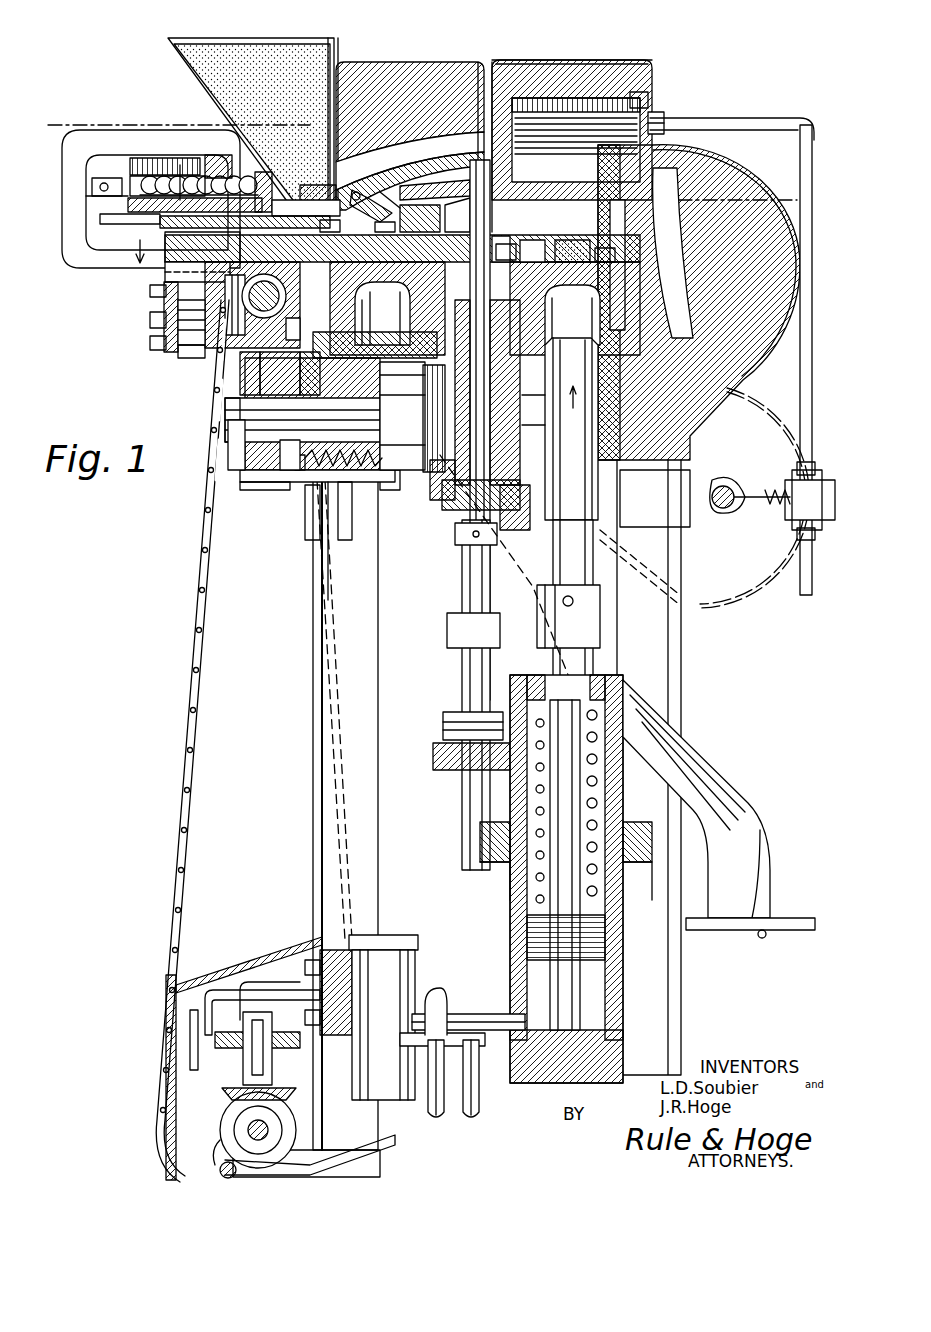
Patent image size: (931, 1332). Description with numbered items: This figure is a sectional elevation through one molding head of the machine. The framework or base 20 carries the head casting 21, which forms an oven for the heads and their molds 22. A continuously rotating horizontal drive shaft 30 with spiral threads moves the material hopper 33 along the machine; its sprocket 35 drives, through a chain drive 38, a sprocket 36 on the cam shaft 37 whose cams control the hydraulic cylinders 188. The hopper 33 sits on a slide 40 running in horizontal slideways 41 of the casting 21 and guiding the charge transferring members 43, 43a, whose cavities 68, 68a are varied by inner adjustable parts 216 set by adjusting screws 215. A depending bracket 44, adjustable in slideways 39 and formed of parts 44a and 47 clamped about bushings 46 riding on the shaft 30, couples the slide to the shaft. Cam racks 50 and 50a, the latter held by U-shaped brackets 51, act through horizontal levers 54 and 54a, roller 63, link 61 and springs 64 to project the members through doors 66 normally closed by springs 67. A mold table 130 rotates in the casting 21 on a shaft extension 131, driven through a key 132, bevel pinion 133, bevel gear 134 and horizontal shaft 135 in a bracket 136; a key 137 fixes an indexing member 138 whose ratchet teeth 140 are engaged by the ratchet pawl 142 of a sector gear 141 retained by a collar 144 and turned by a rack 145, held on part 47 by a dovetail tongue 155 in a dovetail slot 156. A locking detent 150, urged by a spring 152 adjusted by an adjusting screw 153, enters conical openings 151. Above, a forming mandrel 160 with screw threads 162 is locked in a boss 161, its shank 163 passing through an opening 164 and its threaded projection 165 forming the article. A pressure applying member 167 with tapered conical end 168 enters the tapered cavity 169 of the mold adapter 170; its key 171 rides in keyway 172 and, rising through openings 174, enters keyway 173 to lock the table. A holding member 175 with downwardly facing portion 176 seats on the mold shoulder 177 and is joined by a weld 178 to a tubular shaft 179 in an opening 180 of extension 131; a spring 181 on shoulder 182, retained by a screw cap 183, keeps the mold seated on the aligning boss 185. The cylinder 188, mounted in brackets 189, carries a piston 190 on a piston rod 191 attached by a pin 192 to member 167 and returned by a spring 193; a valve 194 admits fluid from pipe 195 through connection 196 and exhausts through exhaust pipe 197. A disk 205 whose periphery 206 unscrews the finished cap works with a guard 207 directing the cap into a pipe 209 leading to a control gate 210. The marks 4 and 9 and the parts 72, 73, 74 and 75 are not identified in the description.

The section line 4- 4 is at (52, 147).
The direction arrow 9 is at (132, 246).
The framework or base 20 is at (683, 656).
The head casting 21 is at (700, 178).
The mold 22 is at (555, 231).
The horizontal drive shaft 30 is at (250, 286).
The material hopper 33 is at (333, 52).
The sprocket 35 is at (242, 362).
The sprocket 36 is at (190, 1085).
The cam shaft 37 is at (246, 1126).
The chain drive 38 is at (186, 761).
The slideways 39 is at (245, 220).
The slide 40 is at (226, 225).
The horizontal slideways 41 is at (205, 245).
The charge transferring member 43 is at (407, 226).
The charge transferring member 43a is at (132, 207).
The depending bracket 44 is at (402, 248).
The bracket part 44a is at (166, 305).
The bushings 46 is at (228, 305).
The bracket part 47 is at (262, 358).
The cam rack 50 is at (175, 250).
The cam rack 50a is at (198, 180).
The U-shaped brackets 51 is at (75, 258).
The horizontal lever 54 is at (128, 220).
The horizontal lever 54a is at (100, 178).
The link 61 is at (100, 196).
The roller 63 is at (138, 160).
The spring 64 is at (182, 165).
The doors 66 is at (389, 193).
The springs 67 is at (370, 190).
The cavity 68 is at (420, 222).
The cavity 68a is at (352, 110).
The bolt 72 is at (152, 320).
The bolt 73 is at (152, 340).
The plate 74 is at (178, 352).
The bolt 75 is at (158, 290).
The mold table 130 is at (745, 388).
The shaft extension 131 is at (458, 500).
The key 132 is at (515, 505).
The bevel pinion 133 is at (445, 495).
The bevel gear 134 is at (435, 470).
The horizontal shaft 135 is at (355, 405).
The bracket 136 is at (340, 485).
The key 137 is at (300, 485).
The indexing member 138 is at (286, 485).
The ratchet teeth 140 is at (250, 380).
The sector gear 141 is at (246, 486).
The ratchet pawl 142 is at (278, 486).
The collar 144 is at (214, 465).
The rack 145 is at (235, 398).
The locking detent 150 is at (310, 540).
The conical openings 151 is at (345, 378).
The spring 152 is at (334, 484).
The adjusting screw 153 is at (388, 490).
The dovetail tongue 155 is at (248, 362).
The dovetail slot 156 is at (278, 332).
The forming mandrel 160 is at (650, 66).
The boss 161 is at (512, 104).
The screw threads 162 is at (642, 100).
The shank 163 is at (576, 140).
The opening 164 is at (630, 160).
The projection 165 is at (618, 208).
The pressure applying member 167 is at (602, 525).
The tapered conical end 168 is at (546, 392).
The tapered cavity 169 is at (600, 248).
The mold adapter 170 is at (795, 280).
The key 171 is at (612, 505).
The keyway 172 is at (618, 474).
The keyway 173 is at (493, 315).
The openings 174 is at (572, 240).
The holding member 175 is at (506, 244).
The downwardly facing portion 176 is at (500, 238).
The shoulder 177 is at (530, 255).
The weld 178 is at (482, 210).
The tubular shaft 179 is at (464, 565).
The opening 180 is at (524, 400).
The spring 181 is at (560, 393).
The shoulder 182 is at (520, 426).
The screw cap 183 is at (386, 292).
The aligning boss 185 is at (800, 338).
The hydraulic cylinder 188 is at (625, 726).
The brackets 189 is at (652, 985).
The piston 190 is at (620, 945).
The piston rod 191 is at (560, 880).
The pin 192 is at (570, 465).
The spring 193 is at (540, 825).
The valve 194 is at (408, 934).
The pipe 195 is at (484, 1112).
The connection 196 is at (452, 1000).
The exhaust pipe 197 is at (436, 1115).
The disk 205 is at (450, 205).
The periphery 206 is at (418, 188).
The guard 207 is at (483, 165).
The pipe 209 is at (690, 770).
The control gate 210 is at (788, 918).
The adjusting screws 215 is at (172, 162).
The inner adjustable parts 216 is at (288, 200).